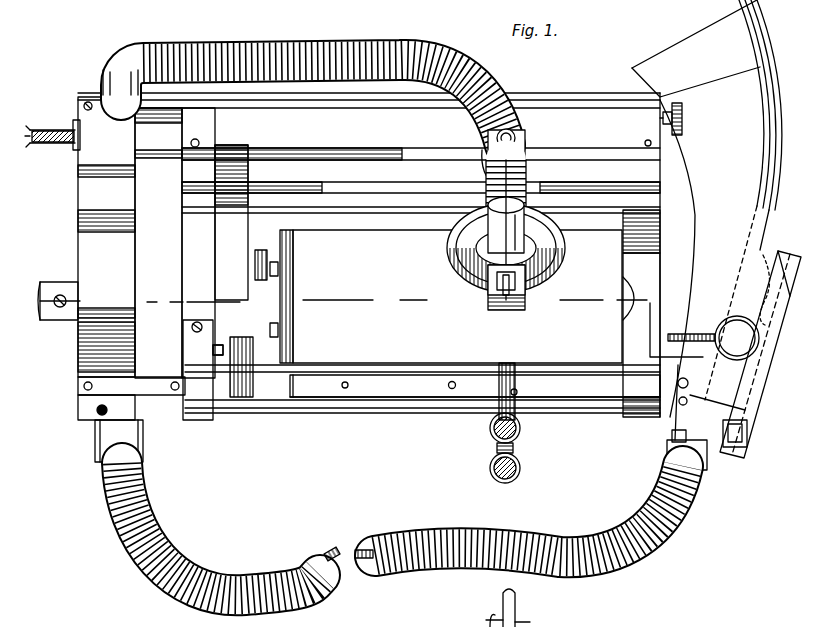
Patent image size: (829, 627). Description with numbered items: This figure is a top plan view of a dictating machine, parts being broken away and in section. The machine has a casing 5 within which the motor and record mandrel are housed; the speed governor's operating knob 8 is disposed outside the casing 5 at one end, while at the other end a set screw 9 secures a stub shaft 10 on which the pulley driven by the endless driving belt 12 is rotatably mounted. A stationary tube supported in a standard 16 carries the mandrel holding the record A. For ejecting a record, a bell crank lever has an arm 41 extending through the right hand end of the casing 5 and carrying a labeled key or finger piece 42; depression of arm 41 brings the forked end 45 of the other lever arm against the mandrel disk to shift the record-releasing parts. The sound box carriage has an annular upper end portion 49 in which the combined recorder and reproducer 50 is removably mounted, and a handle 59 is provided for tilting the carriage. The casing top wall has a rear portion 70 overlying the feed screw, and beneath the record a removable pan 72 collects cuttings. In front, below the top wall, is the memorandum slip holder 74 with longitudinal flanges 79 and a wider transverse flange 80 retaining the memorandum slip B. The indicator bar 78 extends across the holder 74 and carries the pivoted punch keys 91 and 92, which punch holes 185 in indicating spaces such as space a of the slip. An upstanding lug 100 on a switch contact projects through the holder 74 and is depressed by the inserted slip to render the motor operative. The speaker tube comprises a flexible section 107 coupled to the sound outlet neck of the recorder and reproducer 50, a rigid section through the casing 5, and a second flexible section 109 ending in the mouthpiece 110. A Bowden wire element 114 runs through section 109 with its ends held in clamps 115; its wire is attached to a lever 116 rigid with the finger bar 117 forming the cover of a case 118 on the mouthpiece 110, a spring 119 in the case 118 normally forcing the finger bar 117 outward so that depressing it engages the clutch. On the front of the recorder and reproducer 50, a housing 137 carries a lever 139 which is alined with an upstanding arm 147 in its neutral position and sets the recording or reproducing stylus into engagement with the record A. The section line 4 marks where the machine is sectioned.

The casing 5 is at (78, 240).
The operating knob 8 is at (678, 102).
The set screw 9 is at (60, 295).
The stub shaft 10 is at (38, 324).
The endless driving belt 12 is at (520, 62).
The section line 4 is at (22, 290).
The standard 16 is at (343, 280).
The bell crank lever arm 41 is at (704, 315).
The key or finger piece 42 is at (729, 318).
The forked end 45 is at (286, 328).
The annular upper end portion 49 is at (448, 254).
The combined recorder and reproducer 50 is at (472, 266).
The handle 59 is at (490, 147).
The rear portion of top wall 70 is at (608, 192).
The pan 72 is at (573, 219).
The memorandum slip holder 74 is at (346, 400).
The indicator bar 78 is at (520, 372).
The inwardly directed flanges 79 is at (275, 414).
The wide inwardly directed flange 80 is at (213, 422).
The punch key or lever 91 is at (497, 455).
The punch key or lever 92 is at (518, 392).
The upstanding lug 100 is at (210, 355).
The flexible section 107 is at (296, 44).
The second flexible section 109 is at (636, 560).
The mouthpiece 110 is at (707, 105).
The Bowden wire element 114 is at (333, 552).
The brackets or clamps 115 is at (720, 458).
The lever 116 is at (714, 400).
The finger bar 117 is at (778, 308).
The case 118 is at (768, 252).
The spring 119 is at (760, 282).
The housing 137 is at (542, 623).
The lever 139 is at (522, 614).
The upstanding arm 147 is at (486, 626).
The holes 185 is at (450, 392).
The record A is at (470, 313).
The memorandum slip B is at (398, 412).
The indicating space a is at (304, 386).